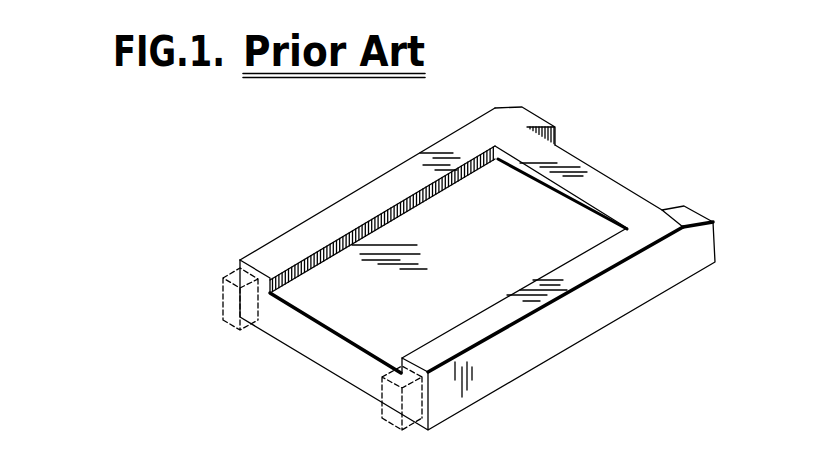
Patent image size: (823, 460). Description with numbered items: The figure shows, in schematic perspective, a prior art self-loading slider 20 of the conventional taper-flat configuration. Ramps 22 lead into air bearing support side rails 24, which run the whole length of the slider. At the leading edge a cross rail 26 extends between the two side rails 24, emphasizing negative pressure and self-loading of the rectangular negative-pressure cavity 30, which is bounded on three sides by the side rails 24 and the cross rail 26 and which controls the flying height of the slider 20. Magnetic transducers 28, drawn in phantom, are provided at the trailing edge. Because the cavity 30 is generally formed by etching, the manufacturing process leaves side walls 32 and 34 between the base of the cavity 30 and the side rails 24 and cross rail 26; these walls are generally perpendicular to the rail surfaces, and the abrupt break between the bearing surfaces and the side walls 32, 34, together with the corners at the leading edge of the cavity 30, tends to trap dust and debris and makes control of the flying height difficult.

The self-loading slider 20 is at (700, 327).
The ramps 22 is at (528, 117).
The air bearing support side rails 24 is at (382, 185).
The cross rail 26 is at (603, 187).
The magnetic transducers 28 is at (222, 300).
The negative-pressure cavity 30 is at (492, 293).
The side wall 32 is at (422, 202).
The side wall 34 is at (548, 188).